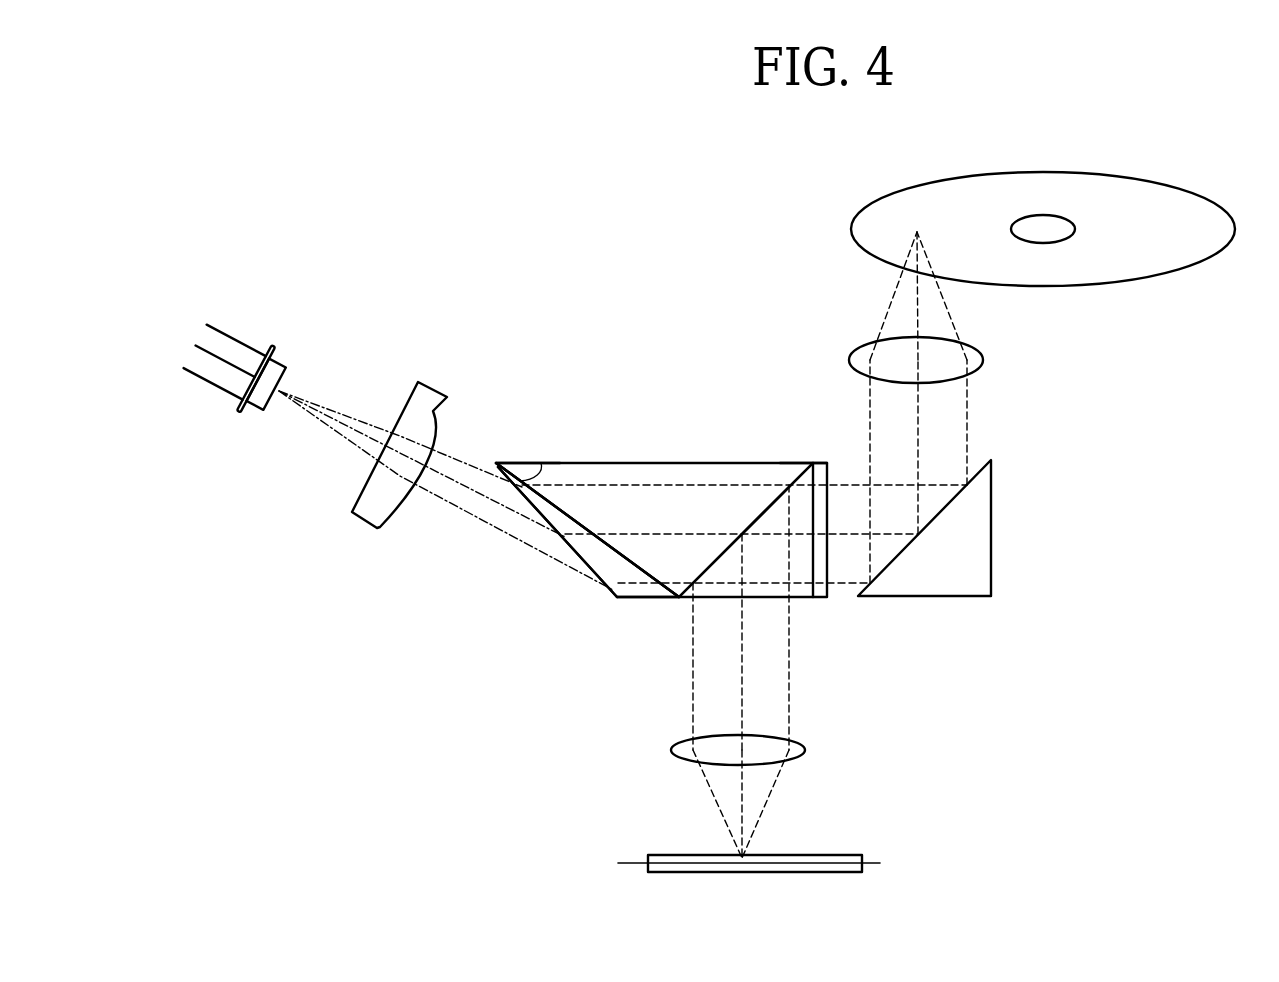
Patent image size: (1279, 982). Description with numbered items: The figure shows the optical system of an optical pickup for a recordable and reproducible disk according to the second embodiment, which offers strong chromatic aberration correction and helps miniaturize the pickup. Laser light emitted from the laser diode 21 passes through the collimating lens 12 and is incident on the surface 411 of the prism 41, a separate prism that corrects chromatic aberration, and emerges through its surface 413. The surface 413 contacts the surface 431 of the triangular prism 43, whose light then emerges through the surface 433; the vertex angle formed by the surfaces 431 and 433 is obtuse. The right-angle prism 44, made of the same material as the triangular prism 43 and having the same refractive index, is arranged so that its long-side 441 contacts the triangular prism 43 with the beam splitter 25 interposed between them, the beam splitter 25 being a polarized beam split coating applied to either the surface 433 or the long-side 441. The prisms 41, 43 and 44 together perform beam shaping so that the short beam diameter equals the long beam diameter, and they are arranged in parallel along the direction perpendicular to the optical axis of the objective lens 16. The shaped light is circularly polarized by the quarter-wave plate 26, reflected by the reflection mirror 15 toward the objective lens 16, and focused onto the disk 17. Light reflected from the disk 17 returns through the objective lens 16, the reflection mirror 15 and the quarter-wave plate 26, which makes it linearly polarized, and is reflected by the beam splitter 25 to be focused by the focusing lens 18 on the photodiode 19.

The collimating lens 12 is at (443, 391).
The reflection mirror 15 is at (992, 510).
The objective lens 16 is at (848, 360).
The reproducible/recordable disk 17 is at (1193, 192).
The focusing lens 18 is at (673, 747).
The photodiode 19 is at (862, 863).
The laser diode 21 is at (283, 358).
The beam splitter 25 is at (757, 517).
The quarter-wave plate 26 is at (815, 463).
The prism 41 is at (643, 598).
The triangular prism 43 is at (613, 463).
The right-angle prism 44 is at (798, 597).
The surface 411 is at (583, 560).
The surface 413 is at (563, 538).
The surface 431 is at (521, 463).
The surface 433 is at (793, 483).
The long-side 441 is at (713, 567).